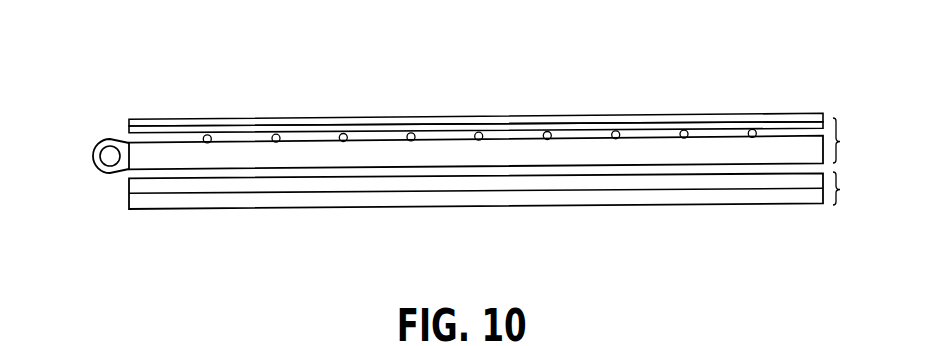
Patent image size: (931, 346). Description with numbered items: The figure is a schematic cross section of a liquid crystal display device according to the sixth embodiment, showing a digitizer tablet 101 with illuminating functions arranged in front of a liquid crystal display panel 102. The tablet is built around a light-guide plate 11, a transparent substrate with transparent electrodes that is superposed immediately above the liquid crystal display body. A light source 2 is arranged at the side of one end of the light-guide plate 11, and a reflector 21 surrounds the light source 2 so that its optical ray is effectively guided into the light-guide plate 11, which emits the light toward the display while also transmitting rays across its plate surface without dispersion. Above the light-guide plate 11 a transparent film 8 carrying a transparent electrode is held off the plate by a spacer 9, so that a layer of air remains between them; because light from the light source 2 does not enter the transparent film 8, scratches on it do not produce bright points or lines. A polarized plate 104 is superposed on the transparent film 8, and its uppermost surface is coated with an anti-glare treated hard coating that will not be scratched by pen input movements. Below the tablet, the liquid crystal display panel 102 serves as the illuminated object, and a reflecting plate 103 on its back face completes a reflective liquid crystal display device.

The light source 2 is at (110, 160).
The transparent film 8 is at (510, 130).
The spacer 9 is at (345, 131).
The light-guide plate 11 is at (578, 147).
The reflector 21 is at (95, 168).
The digitizer tablet 101 is at (853, 140).
The liquid crystal display panel 102 is at (853, 188).
The reflecting plate 103 is at (317, 208).
The polarized plate 104 is at (437, 120).